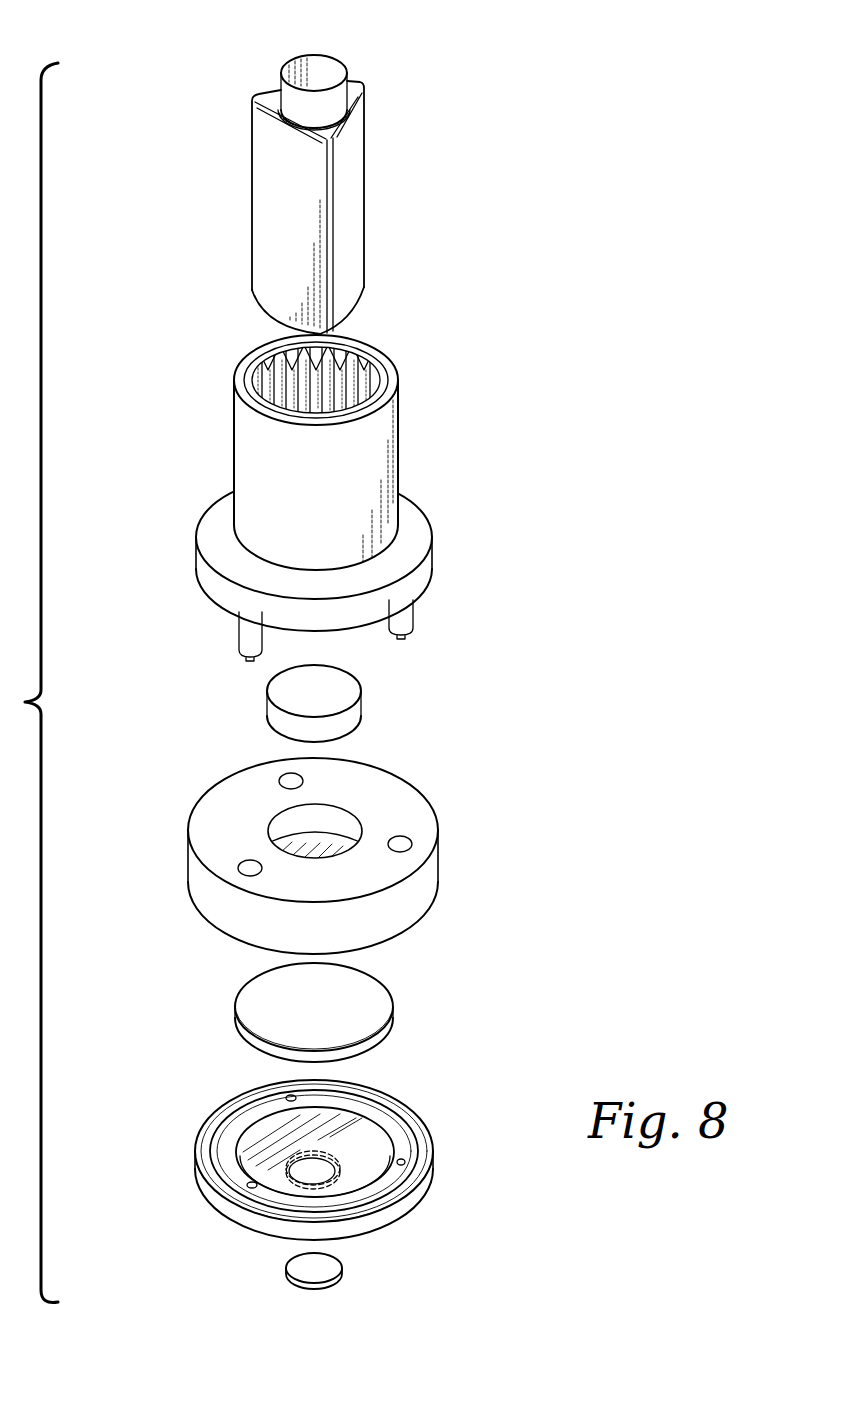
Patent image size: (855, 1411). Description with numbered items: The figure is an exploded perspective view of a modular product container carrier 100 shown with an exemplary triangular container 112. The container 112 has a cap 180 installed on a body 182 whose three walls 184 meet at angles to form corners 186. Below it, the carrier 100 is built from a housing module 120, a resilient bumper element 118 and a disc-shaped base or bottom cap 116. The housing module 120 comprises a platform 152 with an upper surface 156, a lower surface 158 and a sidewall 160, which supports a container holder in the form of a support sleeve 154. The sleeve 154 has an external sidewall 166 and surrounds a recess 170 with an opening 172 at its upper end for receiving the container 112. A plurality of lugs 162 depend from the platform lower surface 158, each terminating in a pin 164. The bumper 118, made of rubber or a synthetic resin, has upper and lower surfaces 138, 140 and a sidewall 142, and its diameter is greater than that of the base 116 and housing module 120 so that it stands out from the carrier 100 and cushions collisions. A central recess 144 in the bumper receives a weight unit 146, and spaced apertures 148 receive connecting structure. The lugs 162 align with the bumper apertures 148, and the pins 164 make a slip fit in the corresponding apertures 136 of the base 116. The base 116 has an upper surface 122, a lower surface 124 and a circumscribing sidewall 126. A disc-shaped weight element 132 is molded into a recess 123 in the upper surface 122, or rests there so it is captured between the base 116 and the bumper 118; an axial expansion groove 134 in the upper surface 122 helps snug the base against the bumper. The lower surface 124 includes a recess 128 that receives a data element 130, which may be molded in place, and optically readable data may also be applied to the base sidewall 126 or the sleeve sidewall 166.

The product container carrier 100 is at (658, 342).
The container 112 is at (412, 181).
The cap 180 is at (333, 70).
The body 182 is at (237, 207).
The walls 184 is at (353, 166).
The corners 186 is at (252, 128).
The housing module 120 is at (463, 408).
The support sleeve 154 is at (395, 393).
The external sidewall 166 is at (375, 452).
The recess 170 is at (335, 365).
The opening 172 is at (248, 340).
The platform 152 is at (448, 553).
The upper surface 156 is at (210, 512).
The sidewall 160 is at (200, 565).
The lower surface 158 is at (208, 596).
The lugs 162 is at (240, 638).
The pins 164 is at (410, 632).
The weight unit 146 is at (365, 712).
The bumper element 118 is at (478, 858).
The upper surface 138 is at (405, 796).
The central recess 144 is at (286, 822).
The apertures 148 is at (410, 843).
The sidewall 142 is at (195, 878).
The lower surface 140 is at (415, 928).
The weight element 132 is at (235, 1010).
The base 116 is at (496, 1122).
The axial expansion groove 134 is at (220, 1120).
The recess 123 is at (362, 1130).
The upper surface 122 is at (398, 1130).
The sidewall 126 is at (428, 1175).
The lower surface 124 is at (388, 1225).
The recess 128 is at (295, 1185).
The apertures 136 is at (245, 1187).
The data element 130 is at (345, 1282).